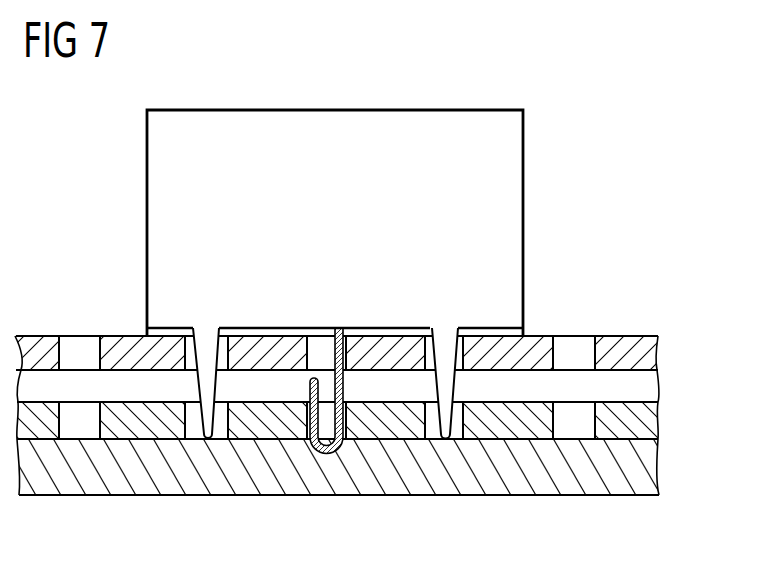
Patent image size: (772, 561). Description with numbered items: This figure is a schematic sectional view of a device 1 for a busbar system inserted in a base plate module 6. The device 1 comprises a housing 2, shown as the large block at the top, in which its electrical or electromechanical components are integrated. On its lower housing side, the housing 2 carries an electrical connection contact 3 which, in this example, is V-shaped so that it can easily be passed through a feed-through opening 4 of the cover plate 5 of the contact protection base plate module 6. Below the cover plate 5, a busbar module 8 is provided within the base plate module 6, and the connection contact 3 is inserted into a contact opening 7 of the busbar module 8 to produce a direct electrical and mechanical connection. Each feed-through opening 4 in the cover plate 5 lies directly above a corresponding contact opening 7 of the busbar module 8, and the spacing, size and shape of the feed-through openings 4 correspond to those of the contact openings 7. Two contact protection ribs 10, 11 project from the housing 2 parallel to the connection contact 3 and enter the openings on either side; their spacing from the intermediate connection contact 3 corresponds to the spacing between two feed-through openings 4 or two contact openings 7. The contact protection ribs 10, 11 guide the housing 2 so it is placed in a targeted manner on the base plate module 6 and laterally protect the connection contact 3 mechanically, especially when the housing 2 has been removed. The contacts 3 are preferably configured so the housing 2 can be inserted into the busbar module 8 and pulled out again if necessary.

The device 1 is at (670, 176).
The housing 2 is at (514, 223).
The electrical connection contact 3 is at (340, 330).
The feed-through opening 4 is at (575, 345).
The cover plate 5 is at (645, 358).
The base plate module 6 is at (711, 335).
The contact opening 7 is at (573, 430).
The busbar module 8 is at (645, 420).
The contact protection rib 10 is at (203, 438).
The contact protection rib 11 is at (445, 438).